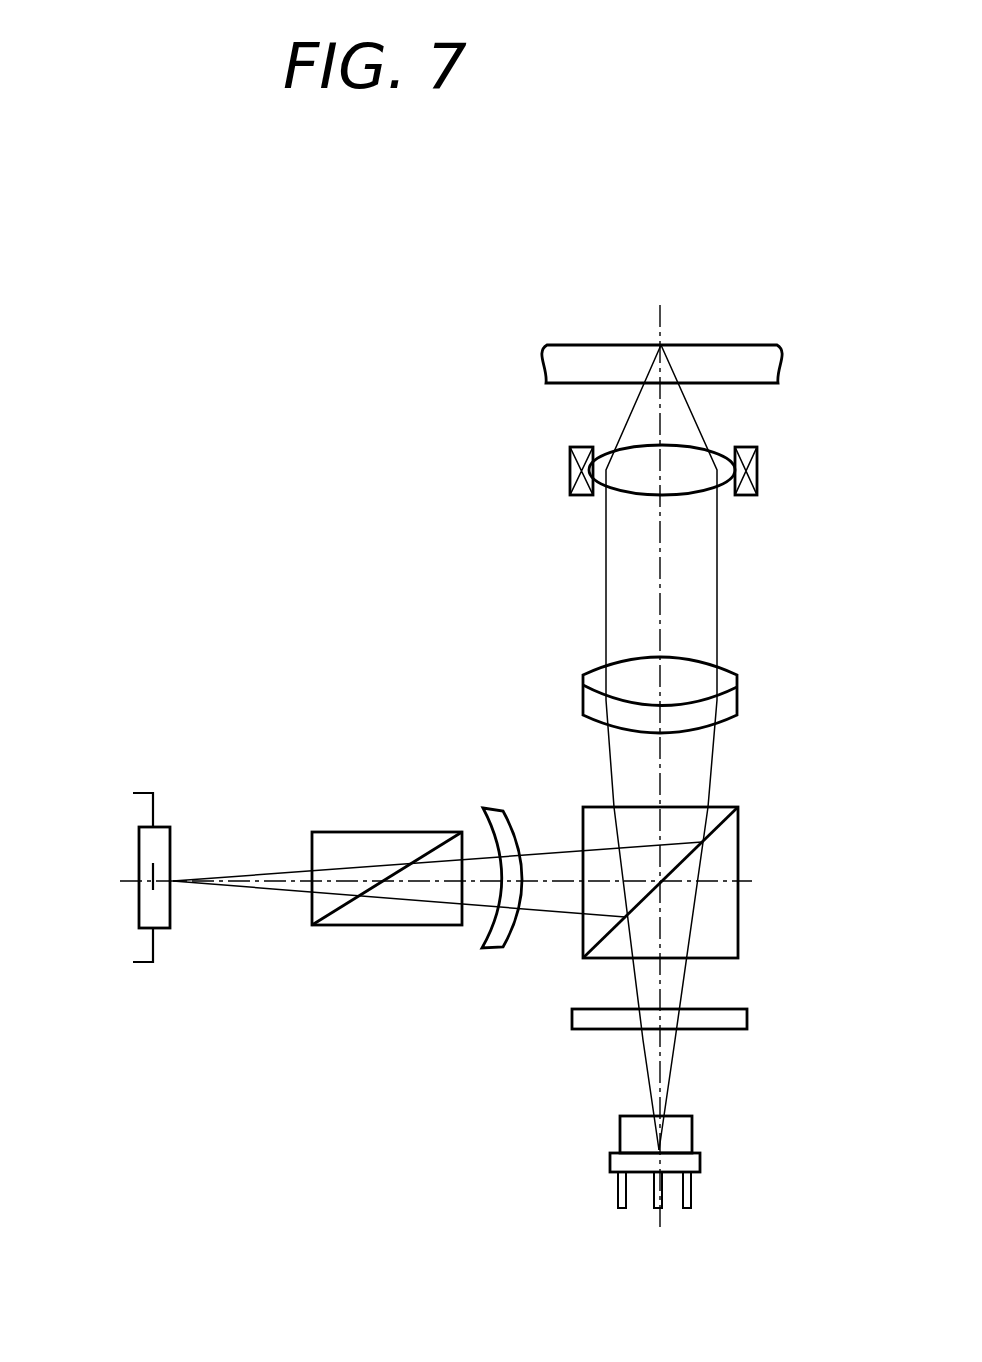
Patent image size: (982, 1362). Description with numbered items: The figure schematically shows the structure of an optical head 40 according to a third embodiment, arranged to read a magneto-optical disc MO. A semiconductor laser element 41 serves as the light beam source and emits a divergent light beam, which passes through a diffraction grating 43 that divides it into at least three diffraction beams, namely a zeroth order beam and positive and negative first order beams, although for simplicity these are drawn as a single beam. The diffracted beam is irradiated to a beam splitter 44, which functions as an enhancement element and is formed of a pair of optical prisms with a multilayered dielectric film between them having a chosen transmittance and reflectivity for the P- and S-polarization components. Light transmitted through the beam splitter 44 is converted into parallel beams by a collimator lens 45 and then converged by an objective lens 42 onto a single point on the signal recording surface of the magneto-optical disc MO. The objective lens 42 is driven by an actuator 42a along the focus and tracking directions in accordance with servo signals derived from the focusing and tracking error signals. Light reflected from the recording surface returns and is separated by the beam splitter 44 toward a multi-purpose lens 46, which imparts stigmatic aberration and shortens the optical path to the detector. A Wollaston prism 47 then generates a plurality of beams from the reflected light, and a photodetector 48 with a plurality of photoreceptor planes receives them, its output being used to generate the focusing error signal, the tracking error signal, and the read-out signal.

The optical head 40 is at (712, 248).
The magneto-optical disc MO is at (573, 362).
The semiconductor laser element 41 is at (692, 1135).
The objective lens 42 is at (683, 492).
The actuator 42a is at (747, 452).
The diffraction grating 43 is at (747, 1018).
The beam splitter 44 is at (740, 837).
The collimator lens 45 is at (740, 698).
The multi-purpose lens 46 is at (488, 950).
The Wollaston prism 47 is at (345, 925).
The photodetector 48 is at (140, 912).